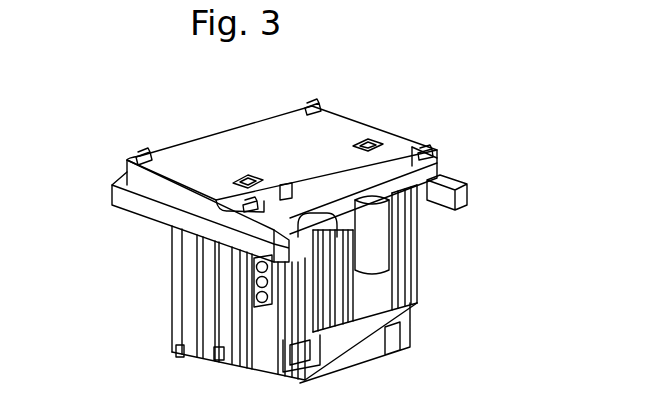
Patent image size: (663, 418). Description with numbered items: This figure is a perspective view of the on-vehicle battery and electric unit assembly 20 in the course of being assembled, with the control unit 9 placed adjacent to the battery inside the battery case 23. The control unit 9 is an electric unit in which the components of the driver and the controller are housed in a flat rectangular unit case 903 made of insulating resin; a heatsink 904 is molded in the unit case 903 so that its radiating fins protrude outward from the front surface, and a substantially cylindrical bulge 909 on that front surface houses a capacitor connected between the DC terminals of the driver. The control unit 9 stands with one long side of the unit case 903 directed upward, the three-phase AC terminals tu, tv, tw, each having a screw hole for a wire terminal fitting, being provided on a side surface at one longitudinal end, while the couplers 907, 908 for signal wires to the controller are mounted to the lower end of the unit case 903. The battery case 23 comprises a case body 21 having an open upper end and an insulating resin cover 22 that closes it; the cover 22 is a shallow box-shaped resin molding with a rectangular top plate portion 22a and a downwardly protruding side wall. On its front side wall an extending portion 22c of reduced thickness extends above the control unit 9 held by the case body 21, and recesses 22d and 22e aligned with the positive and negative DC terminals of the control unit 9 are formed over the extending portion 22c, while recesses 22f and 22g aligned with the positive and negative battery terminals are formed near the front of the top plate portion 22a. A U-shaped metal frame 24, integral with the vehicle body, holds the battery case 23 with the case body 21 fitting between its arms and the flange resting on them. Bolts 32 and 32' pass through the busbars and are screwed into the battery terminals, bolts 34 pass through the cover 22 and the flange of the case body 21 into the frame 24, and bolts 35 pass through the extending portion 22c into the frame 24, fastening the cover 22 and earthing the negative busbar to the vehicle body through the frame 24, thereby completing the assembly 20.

The battery and electric unit assembly 20 is at (444, 136).
The battery case 23 is at (80, 232).
The cover 22 is at (160, 190).
The top plate portion 22a is at (323, 125).
The extending portion 22c is at (435, 168).
The recess 22d is at (416, 145).
The recess 22e is at (283, 184).
The recess 22f is at (388, 167).
The recess 22g is at (220, 197).
The case body 21 is at (172, 285).
The control unit 9 is at (422, 287).
The heatsink 904 is at (420, 270).
The bulge 909 is at (385, 252).
The unit case 903 is at (331, 215).
The coupler 907 is at (397, 343).
The coupler 908 is at (300, 350).
The bolt 32 is at (383, 96).
The bolt 32' is at (242, 123).
The bolt 34 is at (143, 153).
The bolt 35 is at (250, 200).
The frame 24 is at (455, 178).
The AC terminal tu is at (255, 267).
The AC terminal tv is at (180, 347).
The AC terminal tw is at (258, 298).